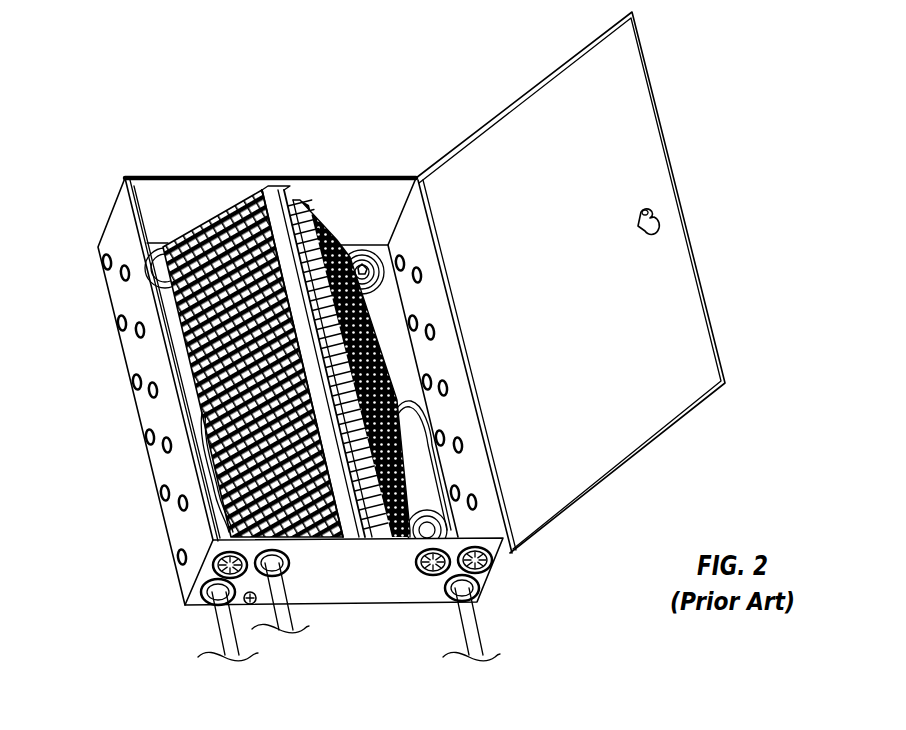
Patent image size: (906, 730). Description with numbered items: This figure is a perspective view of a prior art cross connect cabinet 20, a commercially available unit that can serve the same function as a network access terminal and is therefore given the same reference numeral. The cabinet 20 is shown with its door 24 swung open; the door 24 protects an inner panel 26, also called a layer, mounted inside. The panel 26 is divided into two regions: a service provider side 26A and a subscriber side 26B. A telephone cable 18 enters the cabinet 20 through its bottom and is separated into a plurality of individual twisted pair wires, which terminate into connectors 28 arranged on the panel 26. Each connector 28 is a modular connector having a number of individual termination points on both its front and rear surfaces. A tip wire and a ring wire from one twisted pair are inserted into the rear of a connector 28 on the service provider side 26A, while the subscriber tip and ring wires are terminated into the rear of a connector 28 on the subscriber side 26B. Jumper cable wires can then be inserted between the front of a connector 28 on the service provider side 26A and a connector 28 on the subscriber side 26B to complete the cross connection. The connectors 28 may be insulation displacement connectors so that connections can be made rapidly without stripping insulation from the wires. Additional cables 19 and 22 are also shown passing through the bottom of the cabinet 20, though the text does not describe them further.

The telephone cable 18 is at (217, 627).
The cable 19 is at (280, 610).
The cabinet 20 is at (125, 177).
The outgoing cable 22 is at (460, 623).
The door 24 is at (630, 447).
The inner panel 26 is at (264, 186).
The service provider side 26A is at (200, 340).
The subscriber side 26B is at (330, 243).
The connector 28 is at (223, 215).